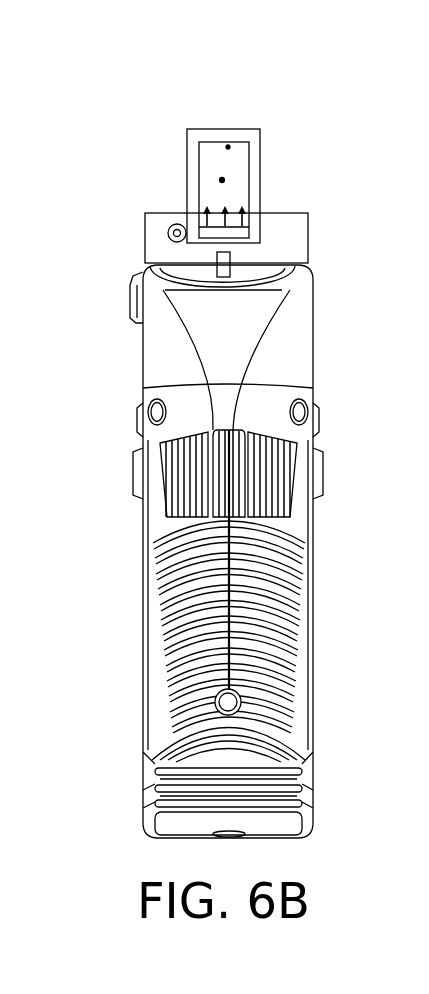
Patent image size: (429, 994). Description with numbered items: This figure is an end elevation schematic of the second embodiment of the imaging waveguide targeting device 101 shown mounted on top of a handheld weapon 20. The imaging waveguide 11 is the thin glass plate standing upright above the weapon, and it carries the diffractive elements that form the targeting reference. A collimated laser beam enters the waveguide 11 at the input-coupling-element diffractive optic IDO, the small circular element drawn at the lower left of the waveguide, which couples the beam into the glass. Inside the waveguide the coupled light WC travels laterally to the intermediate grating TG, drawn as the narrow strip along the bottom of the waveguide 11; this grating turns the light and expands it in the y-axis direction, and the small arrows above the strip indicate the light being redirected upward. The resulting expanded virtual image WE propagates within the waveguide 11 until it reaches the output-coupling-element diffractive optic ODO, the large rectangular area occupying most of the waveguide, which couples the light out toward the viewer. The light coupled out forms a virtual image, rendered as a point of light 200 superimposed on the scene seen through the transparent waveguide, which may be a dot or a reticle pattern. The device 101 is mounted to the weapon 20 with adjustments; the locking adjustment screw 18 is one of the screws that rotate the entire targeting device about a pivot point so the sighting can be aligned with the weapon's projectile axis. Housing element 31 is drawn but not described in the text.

The imaging waveguide targeting device 101 is at (198, 100).
The housing 31 is at (229, 129).
The imaging waveguide 11 is at (194, 178).
The output-coupling-element diffractive optic ODO is at (228, 147).
The point of light 200 is at (222, 180).
The expanded virtual image WE is at (237, 215).
The intermediate grating TG is at (243, 232).
The input-coupling-element diffractive optic IDO is at (190, 232).
The coupled light WC is at (180, 240).
The locking adjustment screw 18 is at (222, 262).
The handheld weapon 20 is at (167, 355).